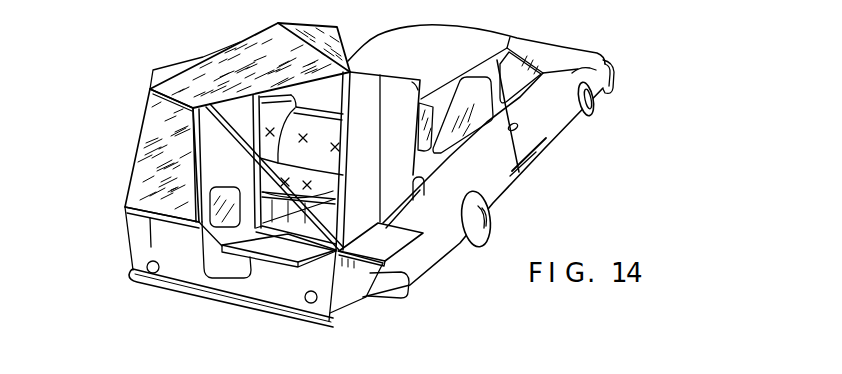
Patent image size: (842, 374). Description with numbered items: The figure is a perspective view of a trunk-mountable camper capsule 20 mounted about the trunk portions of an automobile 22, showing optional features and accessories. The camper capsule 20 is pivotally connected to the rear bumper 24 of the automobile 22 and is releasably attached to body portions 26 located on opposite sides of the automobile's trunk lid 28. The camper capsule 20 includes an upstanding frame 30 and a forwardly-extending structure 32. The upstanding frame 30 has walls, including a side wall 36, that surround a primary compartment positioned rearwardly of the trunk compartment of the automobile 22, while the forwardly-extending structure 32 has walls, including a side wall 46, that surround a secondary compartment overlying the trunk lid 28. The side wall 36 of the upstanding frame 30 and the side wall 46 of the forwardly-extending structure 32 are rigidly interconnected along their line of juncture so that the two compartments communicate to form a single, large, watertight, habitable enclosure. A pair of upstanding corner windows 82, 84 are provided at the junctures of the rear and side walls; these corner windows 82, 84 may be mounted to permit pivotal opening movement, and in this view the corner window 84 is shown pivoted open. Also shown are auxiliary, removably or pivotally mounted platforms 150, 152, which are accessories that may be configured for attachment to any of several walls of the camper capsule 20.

The camper capsule 20 is at (289, 179).
The automobile 22 is at (507, 28).
The rear bumper 24 is at (402, 296).
The body portions 26 is at (412, 203).
The trunk lid 28 is at (425, 185).
The upstanding frame 30 is at (345, 302).
The forwardly-extending structure 32 is at (397, 73).
The side wall 36 is at (363, 304).
The side wall 46 is at (407, 92).
The corner window 82 is at (145, 168).
The corner window 84 is at (294, 32).
The platform 150 is at (286, 250).
The platform 152 is at (402, 238).